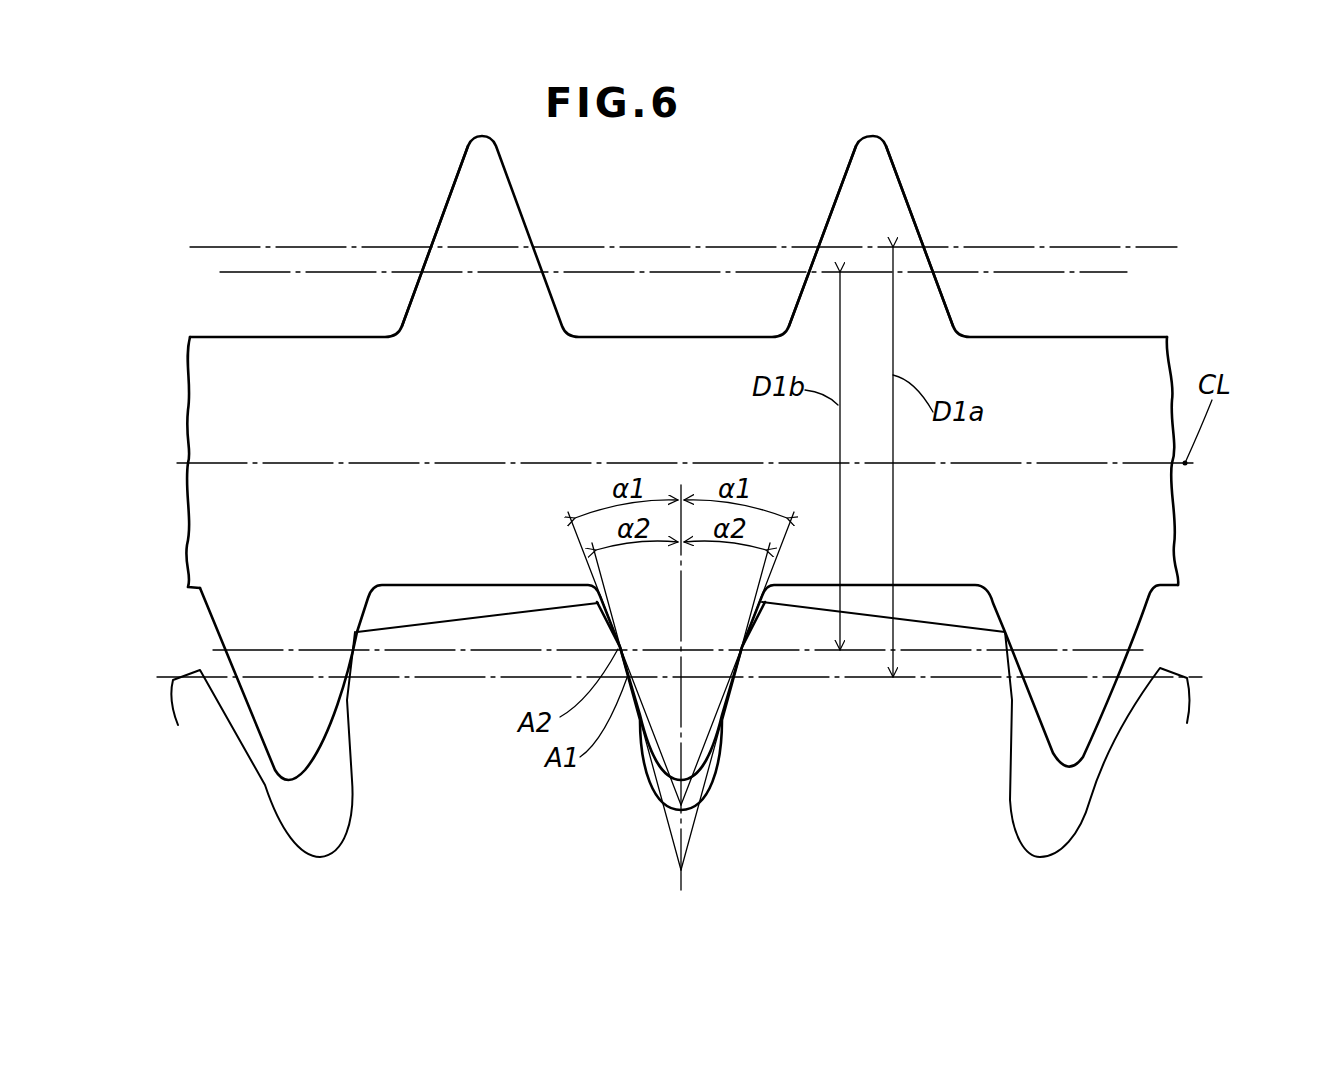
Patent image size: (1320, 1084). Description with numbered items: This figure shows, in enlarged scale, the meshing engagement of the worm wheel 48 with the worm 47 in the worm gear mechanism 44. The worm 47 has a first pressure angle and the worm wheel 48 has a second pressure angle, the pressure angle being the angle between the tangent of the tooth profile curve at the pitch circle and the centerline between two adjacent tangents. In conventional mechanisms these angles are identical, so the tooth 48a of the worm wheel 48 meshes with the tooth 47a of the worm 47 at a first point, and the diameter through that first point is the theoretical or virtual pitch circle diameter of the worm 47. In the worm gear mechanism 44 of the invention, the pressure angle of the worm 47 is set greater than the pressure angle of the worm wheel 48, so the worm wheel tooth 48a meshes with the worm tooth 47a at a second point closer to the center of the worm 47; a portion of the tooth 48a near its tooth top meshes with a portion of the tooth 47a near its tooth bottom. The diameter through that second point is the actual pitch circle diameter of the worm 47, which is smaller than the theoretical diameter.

The worm gear mechanism 44 is at (1177, 210).
The worm 47 is at (937, 228).
The tooth of the worm 47a is at (857, 190).
The worm wheel 48 is at (1188, 668).
The tooth of the worm wheel 48a is at (483, 625).